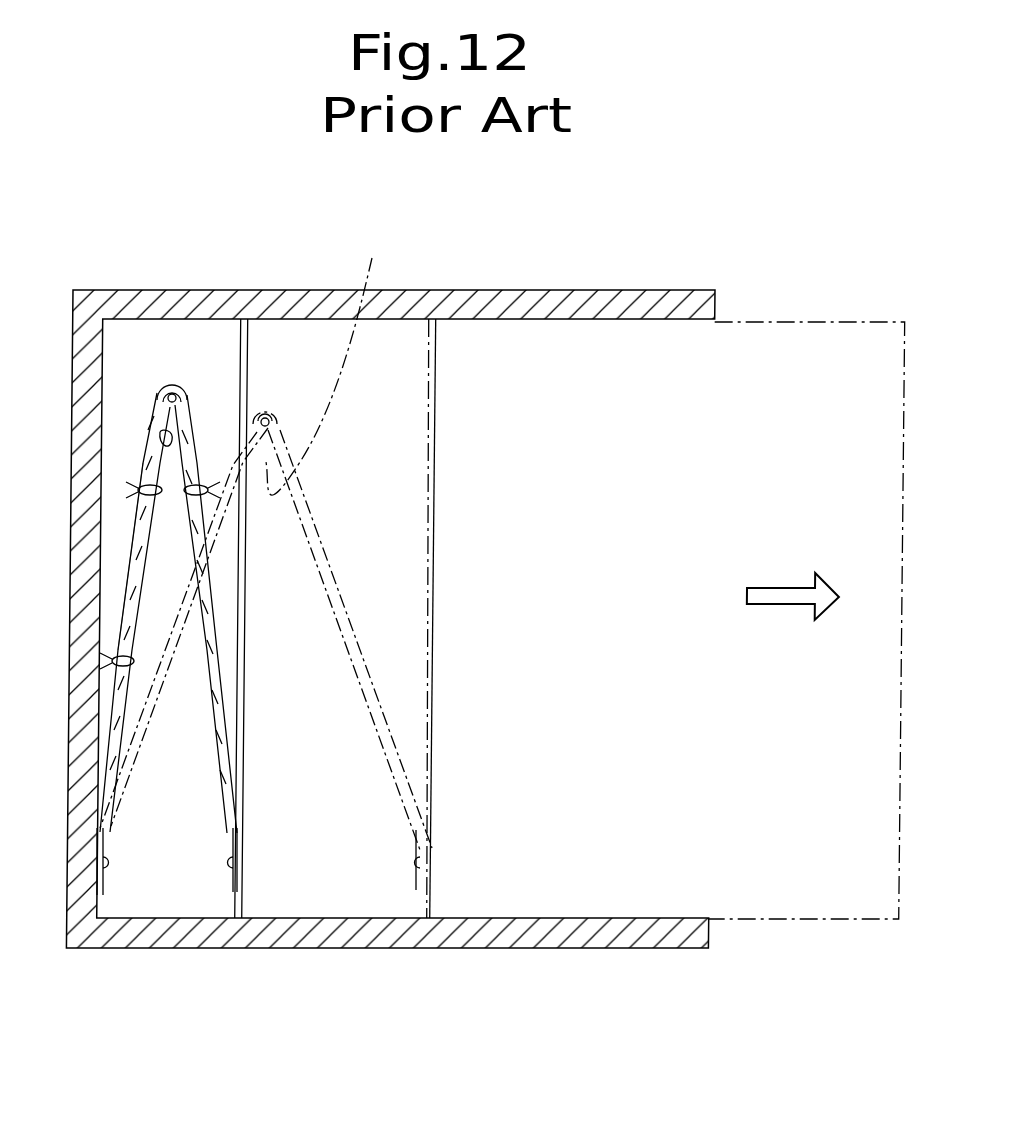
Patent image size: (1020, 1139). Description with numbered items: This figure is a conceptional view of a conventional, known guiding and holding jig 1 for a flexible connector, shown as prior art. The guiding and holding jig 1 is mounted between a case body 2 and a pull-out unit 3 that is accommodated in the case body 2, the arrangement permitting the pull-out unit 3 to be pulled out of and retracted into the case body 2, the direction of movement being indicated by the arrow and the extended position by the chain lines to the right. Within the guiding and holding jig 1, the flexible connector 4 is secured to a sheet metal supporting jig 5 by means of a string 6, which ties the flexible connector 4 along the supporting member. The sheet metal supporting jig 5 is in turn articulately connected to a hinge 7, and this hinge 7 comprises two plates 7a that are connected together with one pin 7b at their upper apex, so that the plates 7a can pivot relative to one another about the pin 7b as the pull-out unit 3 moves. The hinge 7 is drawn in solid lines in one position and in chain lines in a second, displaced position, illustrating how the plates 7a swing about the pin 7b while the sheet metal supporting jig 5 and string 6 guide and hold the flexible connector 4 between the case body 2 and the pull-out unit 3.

The guiding and holding jig 1 is at (199, 369).
The case body 2 is at (322, 298).
The pull-out unit 3 is at (578, 342).
The flexible connector 4 is at (132, 565).
The sheet metal supporting jig 5 is at (226, 798).
The string 6 is at (140, 488).
The hinge 7 is at (264, 518).
The plates 7a is at (152, 448).
The pin 7b is at (176, 385).